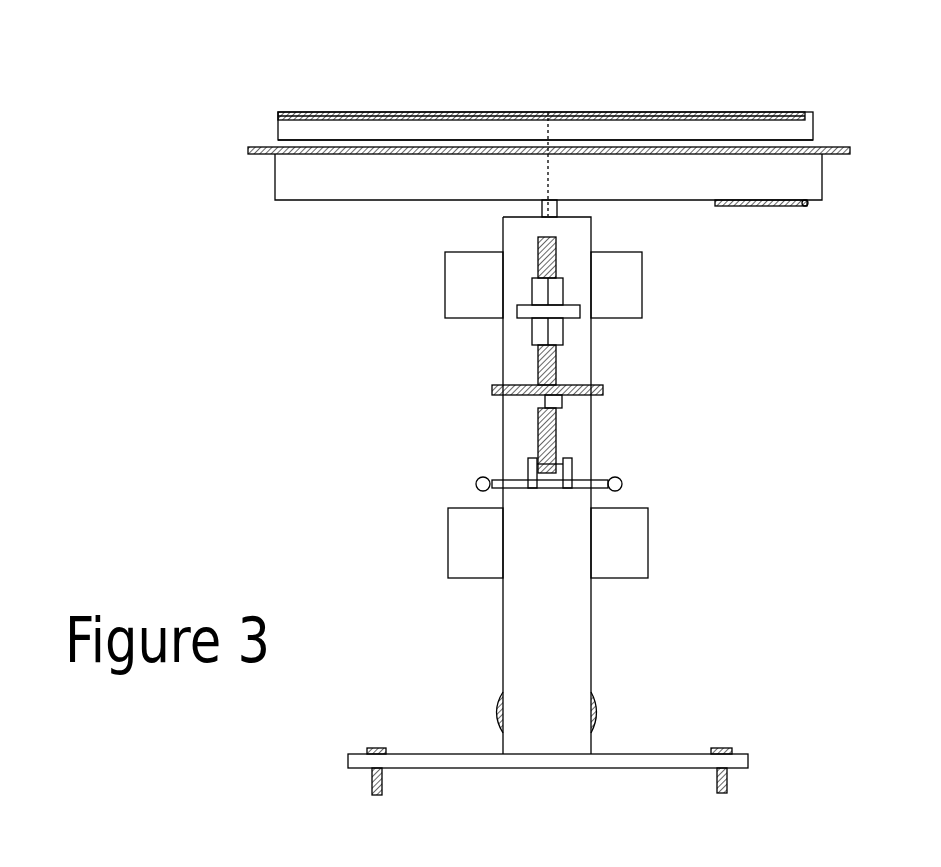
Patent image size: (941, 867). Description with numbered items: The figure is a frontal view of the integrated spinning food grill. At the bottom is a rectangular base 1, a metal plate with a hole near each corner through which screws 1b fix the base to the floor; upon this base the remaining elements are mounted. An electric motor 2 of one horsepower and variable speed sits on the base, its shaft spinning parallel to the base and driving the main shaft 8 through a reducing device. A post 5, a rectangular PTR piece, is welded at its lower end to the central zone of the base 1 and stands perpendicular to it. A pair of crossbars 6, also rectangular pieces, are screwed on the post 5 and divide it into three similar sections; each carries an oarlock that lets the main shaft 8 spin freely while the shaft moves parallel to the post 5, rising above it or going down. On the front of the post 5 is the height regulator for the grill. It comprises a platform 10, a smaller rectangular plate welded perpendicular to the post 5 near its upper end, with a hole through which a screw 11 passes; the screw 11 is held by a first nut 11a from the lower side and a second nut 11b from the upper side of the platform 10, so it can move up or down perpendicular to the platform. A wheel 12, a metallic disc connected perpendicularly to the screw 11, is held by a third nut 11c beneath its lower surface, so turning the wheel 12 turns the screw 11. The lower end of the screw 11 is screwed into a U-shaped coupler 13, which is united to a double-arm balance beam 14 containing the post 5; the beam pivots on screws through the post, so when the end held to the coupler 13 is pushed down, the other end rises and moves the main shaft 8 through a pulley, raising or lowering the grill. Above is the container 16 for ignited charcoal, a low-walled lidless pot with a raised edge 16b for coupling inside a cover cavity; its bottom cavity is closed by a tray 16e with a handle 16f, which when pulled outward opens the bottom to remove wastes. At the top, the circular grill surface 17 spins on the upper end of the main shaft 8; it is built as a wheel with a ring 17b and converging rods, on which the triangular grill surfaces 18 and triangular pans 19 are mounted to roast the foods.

The rectangular base 1 is at (506, 766).
The screws 1b is at (712, 783).
The electric motor 2 is at (600, 709).
The post 5 is at (520, 643).
The crossbars 6 is at (462, 288).
The main shaft 8 is at (538, 208).
The platform 10 is at (511, 319).
The screw 11 is at (560, 361).
The first nut 11a is at (560, 291).
The second nut 11b is at (566, 328).
The third nut 11c is at (540, 403).
The wheel 12 is at (488, 393).
The coupler 13 is at (553, 491).
The double-arm balance beam 14 is at (624, 477).
The container 16 is at (824, 175).
The raised edge 16b is at (838, 143).
The tray 16e is at (750, 208).
The handle 16f is at (812, 208).
The circular grill surface 17 is at (246, 124).
The ring 17b is at (702, 138).
The triangular grill surfaces 18 is at (788, 108).
The triangular pans 19 is at (680, 110).